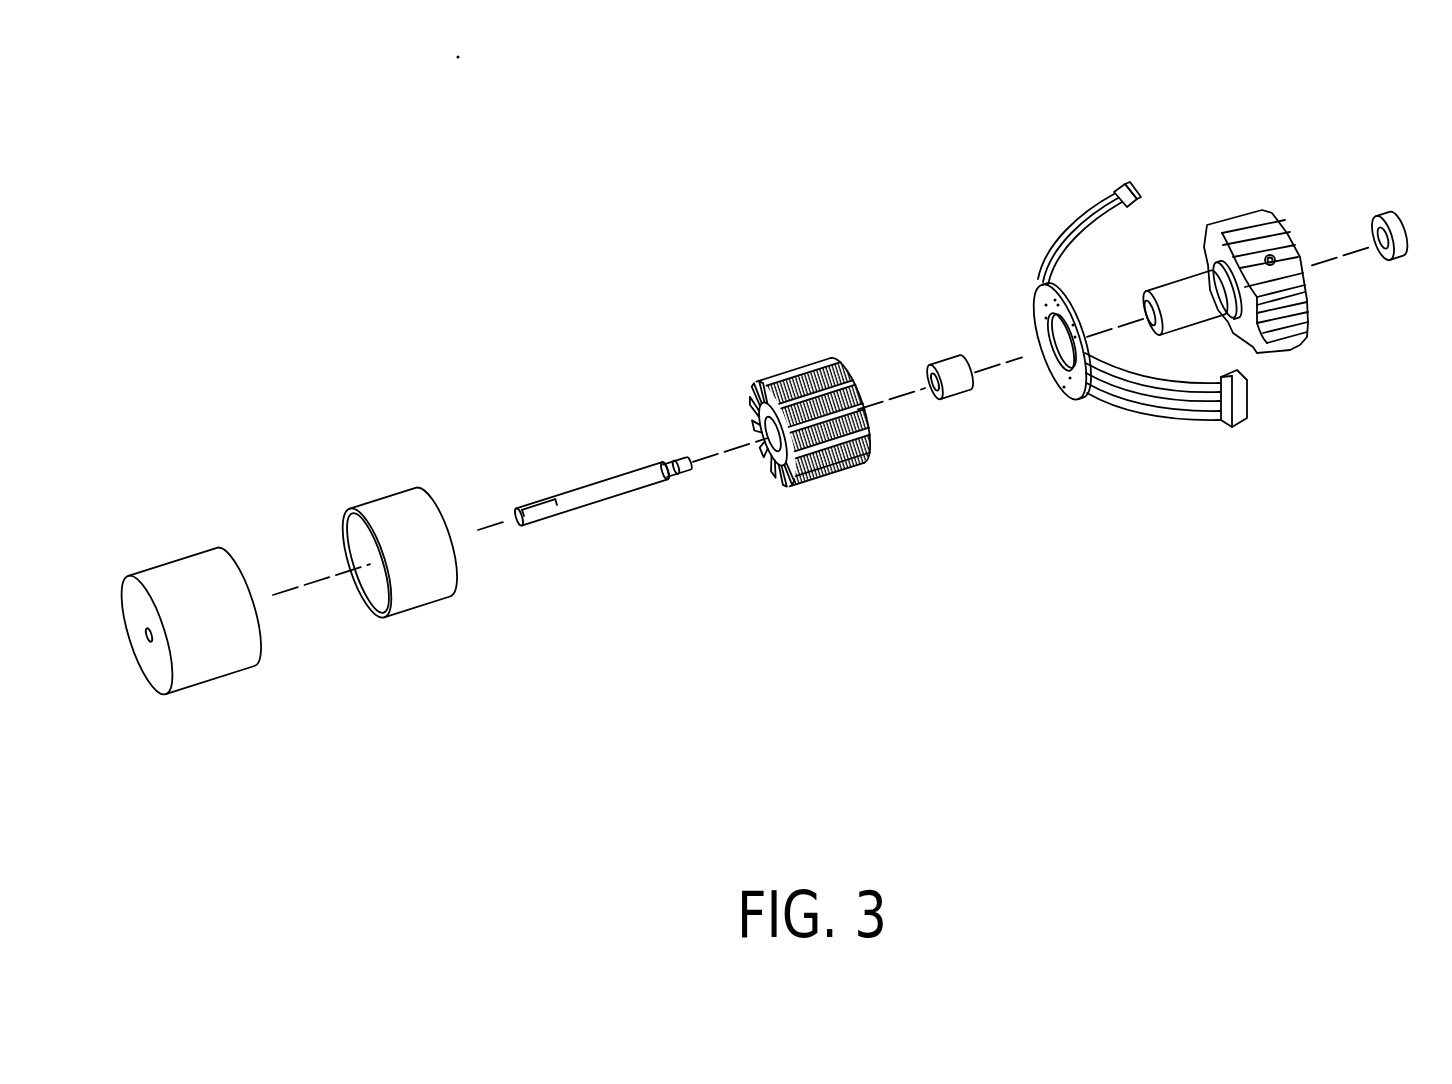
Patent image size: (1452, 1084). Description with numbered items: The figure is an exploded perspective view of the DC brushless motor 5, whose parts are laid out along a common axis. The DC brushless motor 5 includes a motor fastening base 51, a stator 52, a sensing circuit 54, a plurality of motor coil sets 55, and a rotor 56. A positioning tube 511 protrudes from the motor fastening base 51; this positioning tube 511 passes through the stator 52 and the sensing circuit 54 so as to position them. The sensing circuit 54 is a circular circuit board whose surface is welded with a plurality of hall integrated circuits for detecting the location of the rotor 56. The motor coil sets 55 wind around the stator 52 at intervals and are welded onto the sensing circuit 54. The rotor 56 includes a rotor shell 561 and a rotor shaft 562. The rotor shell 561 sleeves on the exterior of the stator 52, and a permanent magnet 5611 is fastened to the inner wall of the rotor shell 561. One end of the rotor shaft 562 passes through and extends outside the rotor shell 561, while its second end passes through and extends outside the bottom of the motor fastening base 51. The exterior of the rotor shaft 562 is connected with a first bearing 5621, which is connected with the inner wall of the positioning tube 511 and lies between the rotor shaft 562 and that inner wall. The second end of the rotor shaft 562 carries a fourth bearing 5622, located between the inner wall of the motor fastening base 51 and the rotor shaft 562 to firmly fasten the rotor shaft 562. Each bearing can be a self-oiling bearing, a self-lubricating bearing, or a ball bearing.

The DC brushless motor 5 is at (942, 192).
The motor fastening base 51 is at (1250, 230).
The positioning tube 511 is at (1177, 287).
The stator 52 is at (792, 482).
The sensing circuit 54 is at (1060, 407).
The motor coil sets 55 is at (870, 427).
The rotor 56 is at (563, 395).
The rotor shell 561 is at (209, 648).
The permanent magnet 5611 is at (428, 581).
The rotor shaft 562 is at (623, 487).
The first bearing 5621 is at (960, 383).
The fourth bearing 5622 is at (1398, 260).